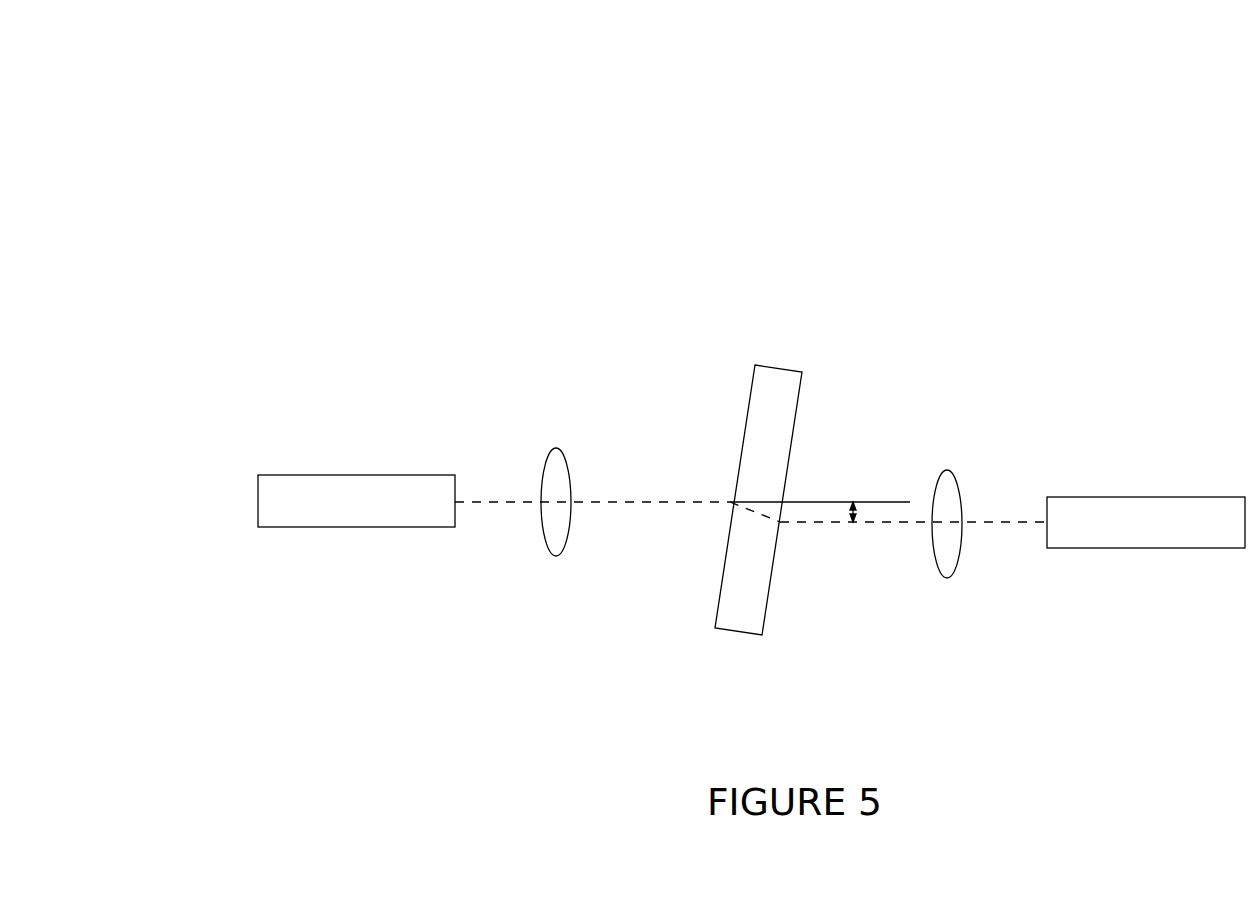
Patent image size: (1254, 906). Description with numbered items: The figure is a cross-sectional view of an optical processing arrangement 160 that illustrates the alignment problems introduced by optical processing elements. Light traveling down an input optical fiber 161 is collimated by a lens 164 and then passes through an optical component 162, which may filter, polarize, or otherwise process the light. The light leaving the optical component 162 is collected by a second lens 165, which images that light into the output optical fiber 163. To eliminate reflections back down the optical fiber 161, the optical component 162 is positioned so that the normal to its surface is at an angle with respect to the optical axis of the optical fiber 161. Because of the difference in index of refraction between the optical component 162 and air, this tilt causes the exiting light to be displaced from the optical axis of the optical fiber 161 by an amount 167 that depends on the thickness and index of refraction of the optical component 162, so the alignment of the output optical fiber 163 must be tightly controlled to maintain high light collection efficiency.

The optical processing arrangement 160 is at (356, 157).
The optical fiber 161 is at (375, 488).
The optical component 162 is at (778, 377).
The output optical fiber 163 is at (1155, 515).
The lens 164 is at (558, 446).
The second lens 165 is at (953, 565).
The displacement amount 167 is at (852, 512).